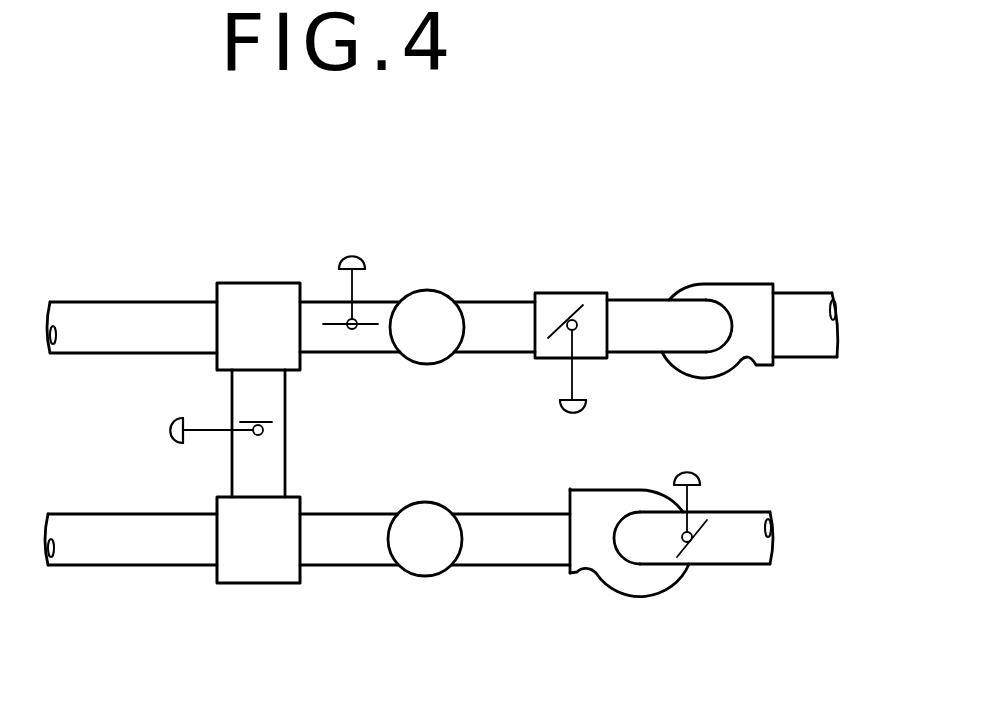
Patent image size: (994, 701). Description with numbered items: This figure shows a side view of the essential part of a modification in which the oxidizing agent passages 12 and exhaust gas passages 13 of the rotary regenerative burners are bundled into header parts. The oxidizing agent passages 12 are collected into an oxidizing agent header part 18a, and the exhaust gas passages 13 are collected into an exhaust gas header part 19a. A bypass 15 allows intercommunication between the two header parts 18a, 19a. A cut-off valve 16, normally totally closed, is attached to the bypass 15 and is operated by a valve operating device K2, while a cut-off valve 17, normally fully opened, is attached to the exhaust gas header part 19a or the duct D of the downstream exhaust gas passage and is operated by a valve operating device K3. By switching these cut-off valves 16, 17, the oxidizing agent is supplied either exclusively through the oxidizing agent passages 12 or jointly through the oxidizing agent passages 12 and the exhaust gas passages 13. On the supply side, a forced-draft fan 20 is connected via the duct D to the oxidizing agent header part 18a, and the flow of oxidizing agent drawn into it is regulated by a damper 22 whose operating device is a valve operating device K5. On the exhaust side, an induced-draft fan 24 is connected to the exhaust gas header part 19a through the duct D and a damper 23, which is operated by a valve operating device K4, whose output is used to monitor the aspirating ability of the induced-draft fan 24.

The oxidizing agent passage 12 is at (124, 568).
The exhaust gas passage 13 is at (133, 300).
The bypass 15 is at (286, 452).
The cut-off valve 16 is at (272, 422).
The cut-off valve 17 is at (370, 318).
The oxidizing agent header part 18a is at (252, 585).
The exhaust gas header part 19a is at (259, 291).
The forced-draft fan 20 is at (623, 598).
The damper 22 is at (690, 553).
The damper 23 is at (572, 300).
The induced-draft fan 24 is at (712, 284).
The valve operating device K2 is at (168, 430).
The valve operating device K3 is at (350, 252).
The valve operating device K4 is at (572, 415).
The valve operating device K5 is at (684, 473).
The duct D is at (352, 330).